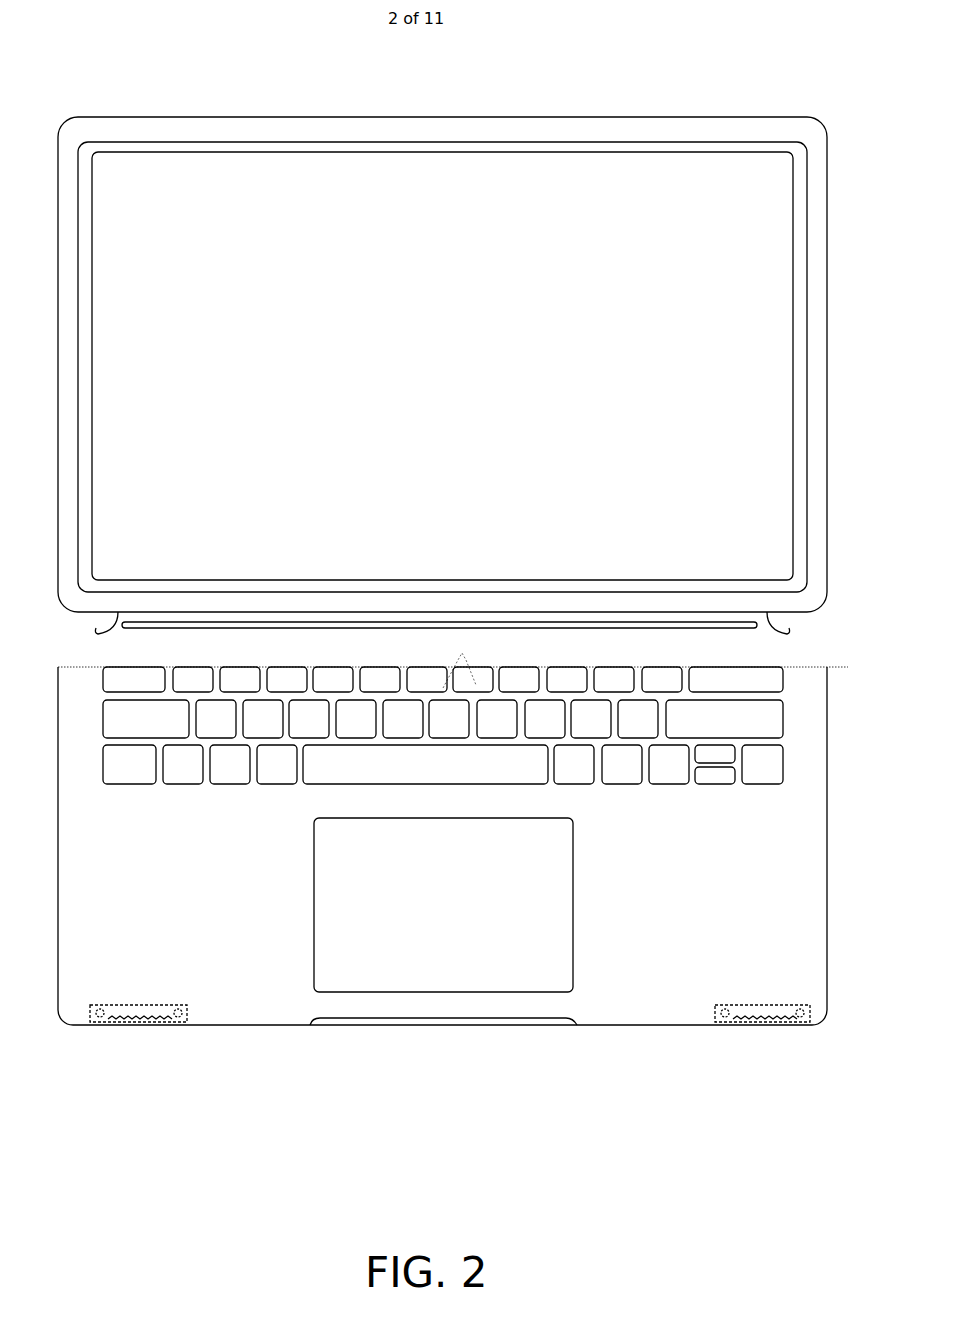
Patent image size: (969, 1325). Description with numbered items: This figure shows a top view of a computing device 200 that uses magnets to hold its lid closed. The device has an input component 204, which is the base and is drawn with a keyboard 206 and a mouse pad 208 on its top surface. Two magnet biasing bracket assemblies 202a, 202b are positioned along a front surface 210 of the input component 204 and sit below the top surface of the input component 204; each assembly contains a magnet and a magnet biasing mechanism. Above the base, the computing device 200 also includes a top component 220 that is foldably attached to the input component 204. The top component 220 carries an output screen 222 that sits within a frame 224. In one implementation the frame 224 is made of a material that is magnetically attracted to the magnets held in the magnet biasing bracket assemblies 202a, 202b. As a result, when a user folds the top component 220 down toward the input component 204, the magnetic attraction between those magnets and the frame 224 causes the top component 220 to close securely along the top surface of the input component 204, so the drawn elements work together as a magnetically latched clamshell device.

The computing device 200 is at (460, 575).
The top component 220 is at (442, 334).
The output screen 222 is at (368, 232).
The frame 224 is at (476, 128).
The input component 204 is at (259, 996).
The keyboard 206 is at (638, 802).
The mouse pad 208 is at (342, 896).
The magnet biasing bracket assembly 202a is at (160, 1034).
The magnet biasing bracket assembly 202b is at (757, 1034).
The front surface 210 is at (590, 1026).